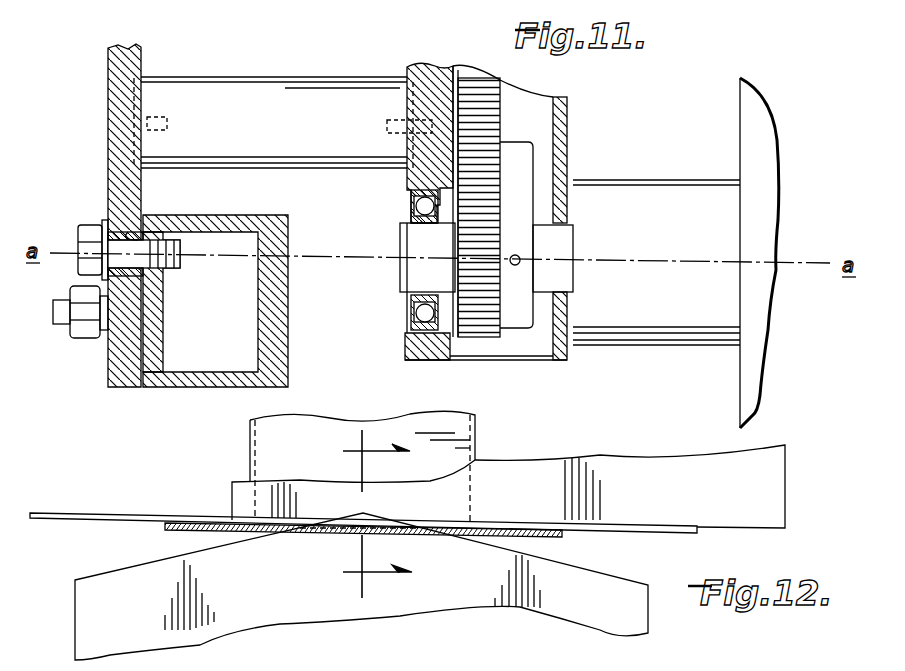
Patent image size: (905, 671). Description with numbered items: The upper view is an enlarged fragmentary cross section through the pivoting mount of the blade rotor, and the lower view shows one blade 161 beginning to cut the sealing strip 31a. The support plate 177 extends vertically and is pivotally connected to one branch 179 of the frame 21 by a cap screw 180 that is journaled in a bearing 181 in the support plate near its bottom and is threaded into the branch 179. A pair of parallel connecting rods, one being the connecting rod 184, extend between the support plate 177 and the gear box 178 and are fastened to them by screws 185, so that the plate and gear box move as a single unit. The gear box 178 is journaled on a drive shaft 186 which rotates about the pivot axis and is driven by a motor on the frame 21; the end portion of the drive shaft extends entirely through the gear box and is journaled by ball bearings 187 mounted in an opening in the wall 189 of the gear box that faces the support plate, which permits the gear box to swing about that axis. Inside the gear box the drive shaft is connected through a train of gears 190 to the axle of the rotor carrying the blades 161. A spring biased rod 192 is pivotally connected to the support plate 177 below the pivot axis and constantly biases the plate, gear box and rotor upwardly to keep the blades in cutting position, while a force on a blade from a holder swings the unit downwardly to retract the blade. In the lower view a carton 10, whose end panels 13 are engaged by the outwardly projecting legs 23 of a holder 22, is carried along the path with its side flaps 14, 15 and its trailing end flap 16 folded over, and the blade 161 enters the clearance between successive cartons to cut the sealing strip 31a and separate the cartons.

In FIG. 11, the support plate 177 is at (108, 76).
In FIG. 11, the connecting rod 184 is at (257, 77).
In FIG. 11, the screws 185 is at (167, 118).
In FIG. 11, the branch of the frame 179 is at (288, 278).
In FIG. 11, the cap screw 180 is at (88, 225).
In FIG. 11, the bearing 181 is at (136, 230).
In FIG. 11, the spring biased rod 192 is at (80, 338).
In FIG. 11, the train of gears 190 is at (513, 128).
In FIG. 11, the wall of gear box 189 is at (407, 178).
In FIG. 11, the ball bearings 187 is at (412, 310).
In FIG. 11, the gear box 178 is at (565, 153).
In FIG. 11, the drive shaft 186 is at (565, 242).
In FIG. 11, the frame 21 is at (773, 152).
In FIG. 12, the carton 10 is at (478, 416).
In FIG. 12, the legs 23 is at (232, 500).
In FIG. 12, the holder 22 is at (612, 462).
In FIG. 12, the side flap 14 is at (85, 528).
In FIG. 12, the sealing strip 31a is at (228, 532).
In FIG. 12, the end flap 16 is at (468, 522).
In FIG. 12, the side flap 15 is at (650, 533).
In FIG. 12, the blade 161 is at (222, 626).
In FIG. 12, the end panel 13 is at (361, 514).